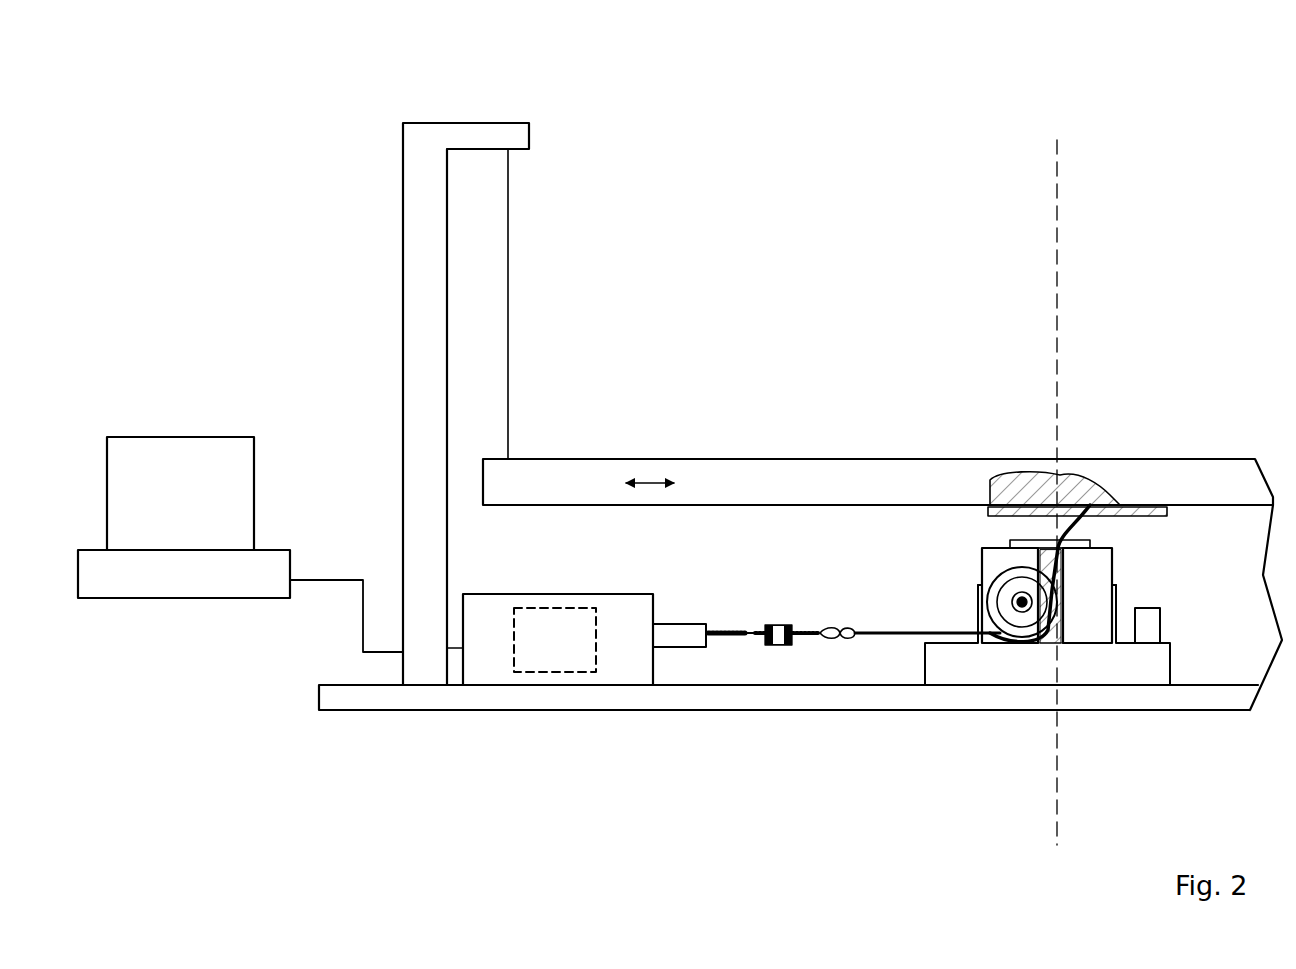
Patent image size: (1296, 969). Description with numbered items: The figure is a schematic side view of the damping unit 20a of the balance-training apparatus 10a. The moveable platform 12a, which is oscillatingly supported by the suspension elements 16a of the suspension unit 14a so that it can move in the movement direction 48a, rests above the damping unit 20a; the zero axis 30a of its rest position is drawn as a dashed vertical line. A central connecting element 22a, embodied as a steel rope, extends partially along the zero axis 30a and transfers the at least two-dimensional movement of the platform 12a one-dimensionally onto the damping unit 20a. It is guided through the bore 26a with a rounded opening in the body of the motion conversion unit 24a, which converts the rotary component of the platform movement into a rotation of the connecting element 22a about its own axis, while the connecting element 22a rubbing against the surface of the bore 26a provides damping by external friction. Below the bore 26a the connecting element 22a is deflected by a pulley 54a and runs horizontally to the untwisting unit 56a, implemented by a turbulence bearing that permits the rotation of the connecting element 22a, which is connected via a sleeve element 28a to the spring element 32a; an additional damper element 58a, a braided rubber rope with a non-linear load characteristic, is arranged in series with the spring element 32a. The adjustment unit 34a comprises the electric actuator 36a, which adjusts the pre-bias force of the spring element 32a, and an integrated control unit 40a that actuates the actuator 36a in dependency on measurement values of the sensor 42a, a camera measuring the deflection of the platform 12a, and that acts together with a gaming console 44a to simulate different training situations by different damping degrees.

The apparatus 10a is at (320, 148).
The moveable platform 12a is at (805, 482).
The suspension unit 14a is at (403, 148).
The suspension elements 16a is at (508, 258).
The damping unit 20a is at (990, 715).
The central connecting element 22a is at (1100, 500).
The motion conversion unit 24a is at (980, 562).
The bore 26a is at (1073, 540).
The sleeve element 28a is at (800, 645).
The zero axis 30a is at (1057, 258).
The spring element 32a is at (763, 645).
The adjustment unit 34a is at (553, 683).
The electric actuator 36a is at (677, 645).
The control unit 40a is at (527, 648).
The sensor 42a is at (1147, 628).
The gaming console 44a is at (190, 588).
The movement direction 48a is at (653, 483).
The pulley 54a is at (990, 602).
The untwisting unit 56a is at (835, 640).
The additional damper element 58a is at (730, 633).